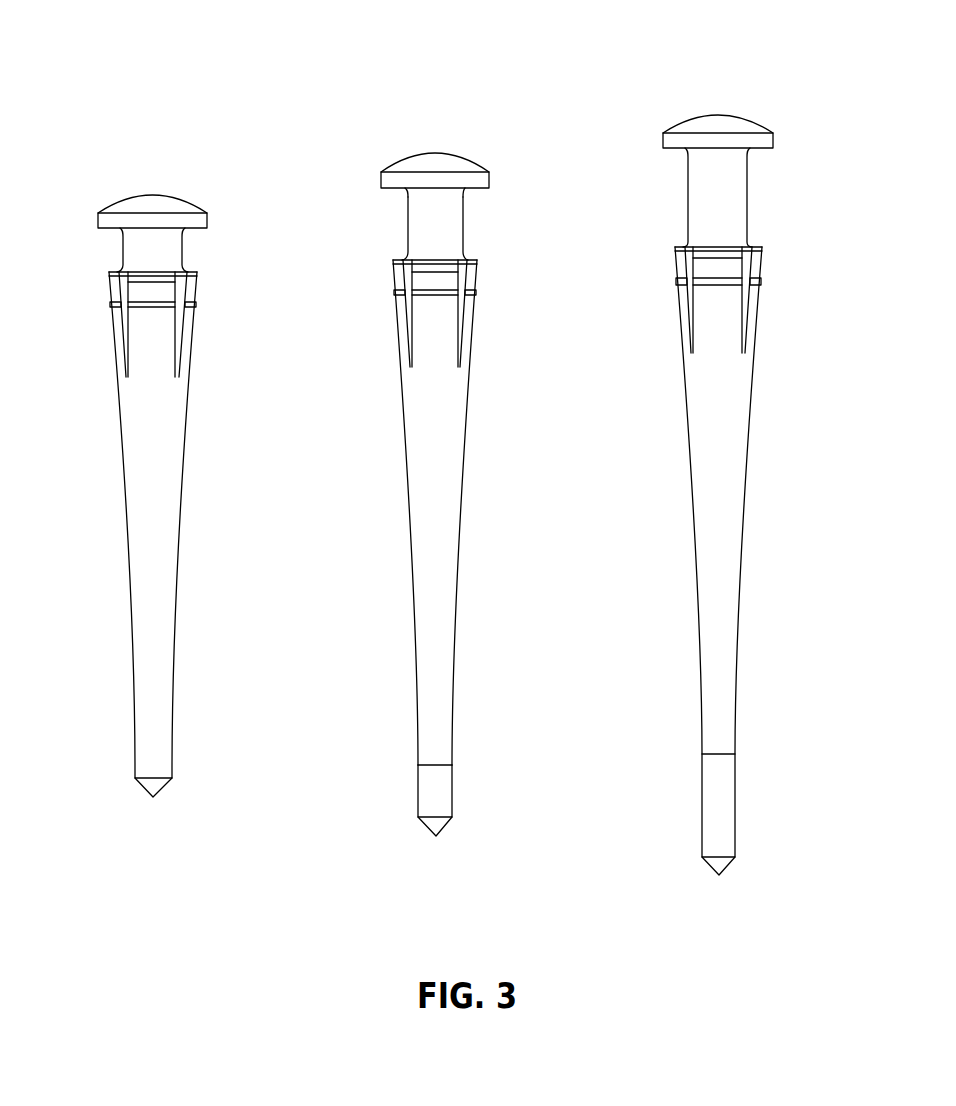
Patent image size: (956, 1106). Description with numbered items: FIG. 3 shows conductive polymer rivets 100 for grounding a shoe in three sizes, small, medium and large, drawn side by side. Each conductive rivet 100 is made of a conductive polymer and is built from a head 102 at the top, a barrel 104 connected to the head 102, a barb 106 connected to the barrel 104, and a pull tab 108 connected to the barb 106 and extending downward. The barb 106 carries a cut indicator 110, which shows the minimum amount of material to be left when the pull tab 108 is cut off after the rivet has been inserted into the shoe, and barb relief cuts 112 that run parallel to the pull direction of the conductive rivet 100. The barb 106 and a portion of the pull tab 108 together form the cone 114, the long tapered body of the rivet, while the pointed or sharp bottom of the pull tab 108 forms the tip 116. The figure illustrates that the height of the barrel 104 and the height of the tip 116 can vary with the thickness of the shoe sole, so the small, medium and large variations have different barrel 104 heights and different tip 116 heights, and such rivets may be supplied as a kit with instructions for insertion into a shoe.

The conductive rivet 100 is at (294, 103).
The head 102 is at (482, 163).
The barrel 104 is at (463, 232).
The barb 106 is at (480, 262).
The pull tab 108 is at (480, 367).
The cut indicator 110 is at (375, 298).
The barb relief cuts 112 is at (387, 264).
The cone 114 is at (388, 365).
The tip 116 is at (388, 772).